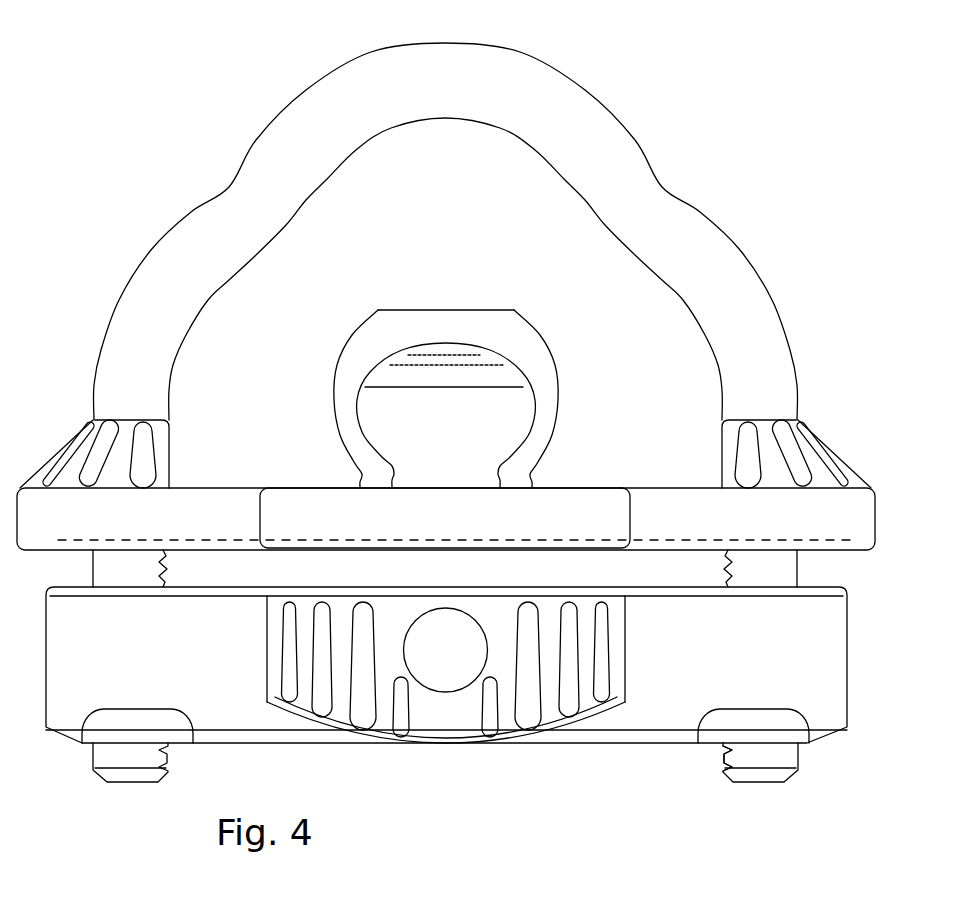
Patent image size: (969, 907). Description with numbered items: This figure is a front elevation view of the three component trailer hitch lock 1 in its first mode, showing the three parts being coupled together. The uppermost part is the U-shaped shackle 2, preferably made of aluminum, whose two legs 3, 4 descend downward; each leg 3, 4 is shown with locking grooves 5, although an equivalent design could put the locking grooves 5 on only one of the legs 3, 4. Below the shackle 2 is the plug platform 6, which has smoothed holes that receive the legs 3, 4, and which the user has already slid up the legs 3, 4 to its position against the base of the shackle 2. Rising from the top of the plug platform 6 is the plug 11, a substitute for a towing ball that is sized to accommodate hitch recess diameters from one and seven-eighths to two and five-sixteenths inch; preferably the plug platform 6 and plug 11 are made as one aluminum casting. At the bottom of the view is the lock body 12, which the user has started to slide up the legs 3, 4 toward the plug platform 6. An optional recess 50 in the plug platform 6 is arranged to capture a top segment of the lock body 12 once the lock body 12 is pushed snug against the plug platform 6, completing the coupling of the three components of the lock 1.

The three component trailer hitch lock 1 is at (762, 76).
The U-shaped shackle 2 is at (655, 192).
The leg 3 is at (118, 758).
The leg 4 is at (797, 757).
The locking grooves 5 is at (728, 755).
The plug platform 6 is at (867, 518).
The plug 11 is at (538, 355).
The lock body 12 is at (823, 650).
The recess 50 is at (650, 543).